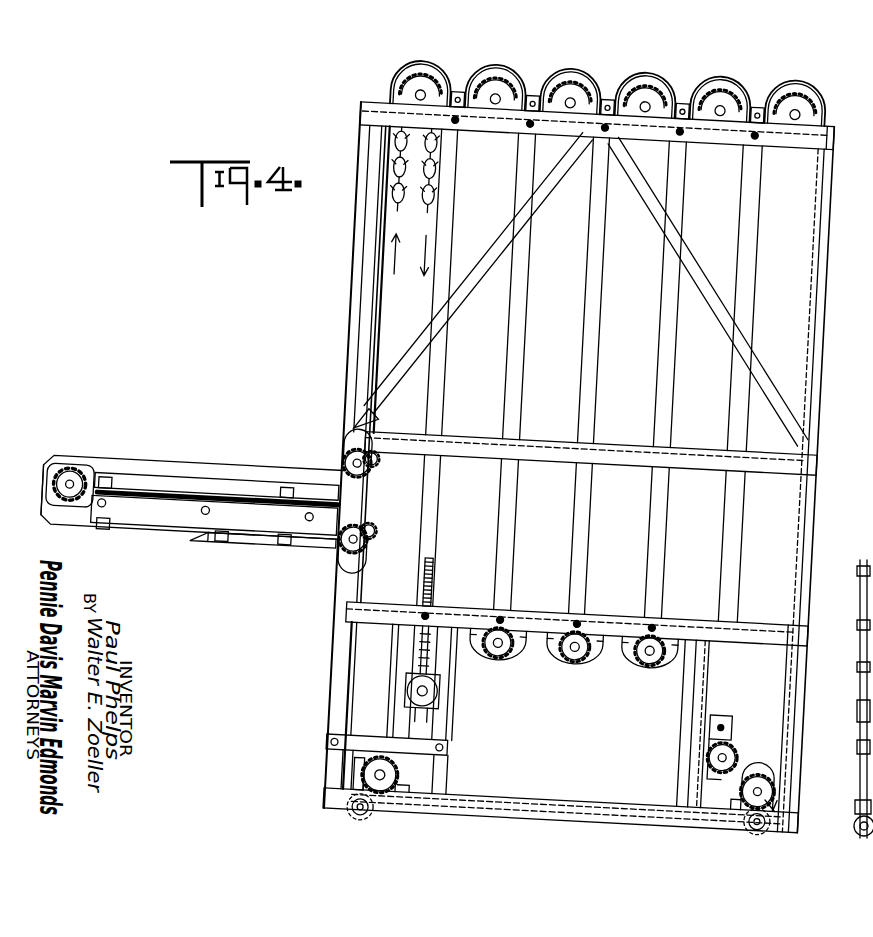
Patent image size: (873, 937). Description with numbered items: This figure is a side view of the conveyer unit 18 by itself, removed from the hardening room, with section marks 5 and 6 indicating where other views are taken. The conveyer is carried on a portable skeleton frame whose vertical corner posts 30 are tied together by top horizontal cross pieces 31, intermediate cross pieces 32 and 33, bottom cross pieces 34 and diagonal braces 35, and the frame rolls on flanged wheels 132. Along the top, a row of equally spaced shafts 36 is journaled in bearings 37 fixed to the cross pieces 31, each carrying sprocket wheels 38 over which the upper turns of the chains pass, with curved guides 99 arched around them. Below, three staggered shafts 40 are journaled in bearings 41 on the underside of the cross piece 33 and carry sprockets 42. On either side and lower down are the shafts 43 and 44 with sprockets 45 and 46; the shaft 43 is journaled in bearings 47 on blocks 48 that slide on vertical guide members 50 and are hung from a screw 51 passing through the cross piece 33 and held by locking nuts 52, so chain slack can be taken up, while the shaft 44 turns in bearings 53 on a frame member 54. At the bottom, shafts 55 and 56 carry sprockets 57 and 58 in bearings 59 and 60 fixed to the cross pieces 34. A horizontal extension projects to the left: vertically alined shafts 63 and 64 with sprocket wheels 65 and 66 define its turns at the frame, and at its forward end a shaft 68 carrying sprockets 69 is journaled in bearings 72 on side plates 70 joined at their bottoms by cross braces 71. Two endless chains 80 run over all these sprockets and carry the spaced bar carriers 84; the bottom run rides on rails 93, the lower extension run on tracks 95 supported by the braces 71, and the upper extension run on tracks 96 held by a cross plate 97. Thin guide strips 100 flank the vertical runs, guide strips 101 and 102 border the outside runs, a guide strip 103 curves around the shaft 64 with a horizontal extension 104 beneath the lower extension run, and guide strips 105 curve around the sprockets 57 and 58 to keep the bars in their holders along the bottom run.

The section line 5- 5 is at (615, 47).
The section line 6- 6 is at (45, 420).
The conveyer unit 18 is at (763, 86).
The vertical corner posts 30 is at (354, 256).
The top horizontal cross pieces 31 is at (830, 126).
The intermediate cross pieces 32 is at (545, 444).
The intermediate cross piece 33 is at (537, 614).
The bottom cross pieces 34 is at (506, 800).
The diagonal braces 35 is at (470, 289).
The shafts 36 is at (488, 90).
The bearings 37 is at (620, 86).
The sprocket wheels 38 is at (567, 86).
The shafts 40 is at (512, 660).
The bearings 41 is at (502, 660).
The sprockets 42 is at (512, 666).
The shaft 43 is at (412, 691).
The shaft 44 is at (730, 753).
The sprockets 45 is at (866, 692).
The sprockets 46 is at (740, 759).
The bearings 47 is at (406, 684).
The blocks 48 is at (438, 692).
The vertical guide members 50 is at (398, 718).
The screw 51 is at (434, 556).
The locking nuts 52 is at (412, 622).
The bearings 53 is at (706, 746).
The frame member 54 is at (686, 694).
The shaft 55 is at (345, 772).
The shaft 56 is at (762, 793).
The sprockets 57 is at (400, 769).
The sprockets 58 is at (774, 767).
The bearings 59 is at (370, 768).
The bearings 60 is at (790, 814).
The shaft 63 is at (370, 474).
The shaft 64 is at (372, 536).
The sprocket wheels 65 is at (376, 458).
The sprocket wheels 66 is at (372, 525).
The shaft 68 is at (74, 474).
The sprockets 69 is at (84, 497).
The plates 70 is at (194, 528).
The cross braces 71 is at (120, 530).
The bearings 72 is at (94, 466).
The endless chains 80 is at (392, 216).
The carriers 84 is at (420, 220).
The rails 93 is at (551, 802).
The tracks 95 is at (156, 522).
The tracks 96 is at (200, 476).
The cross plate 97 is at (230, 492).
The curved guides 99 is at (404, 72).
The guide strips 100 is at (519, 183).
The guide strips 101 is at (822, 334).
The guide strip 102 is at (367, 292).
The guide strip 103 is at (348, 674).
The horizontal extension 104 is at (276, 540).
The guide strips 105 is at (616, 806).
The flanged wheels 132 is at (346, 811).